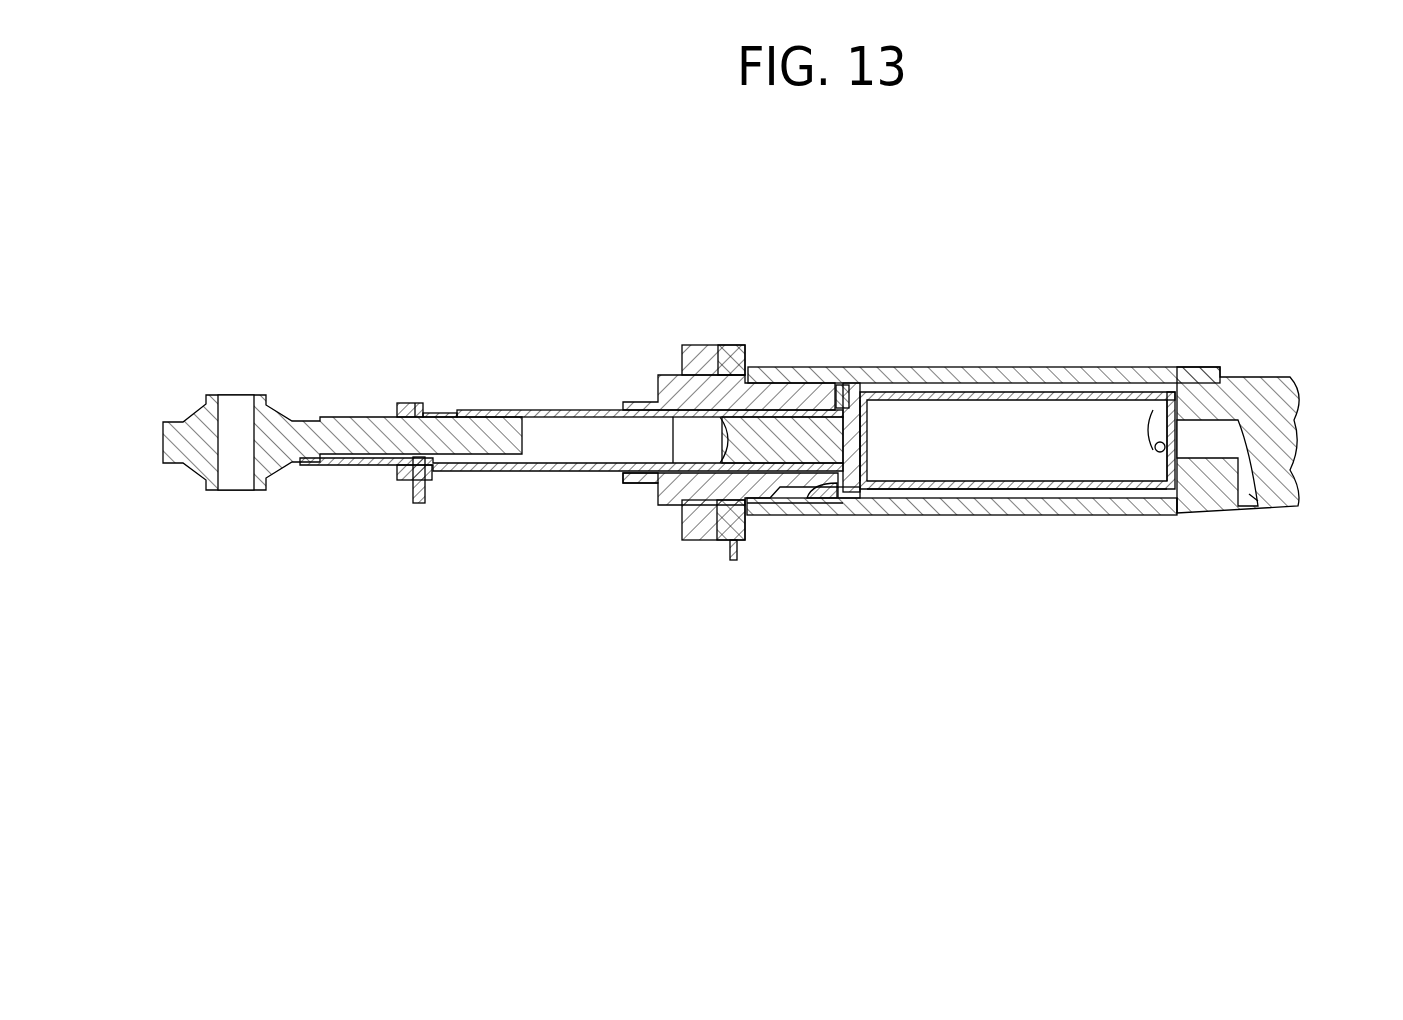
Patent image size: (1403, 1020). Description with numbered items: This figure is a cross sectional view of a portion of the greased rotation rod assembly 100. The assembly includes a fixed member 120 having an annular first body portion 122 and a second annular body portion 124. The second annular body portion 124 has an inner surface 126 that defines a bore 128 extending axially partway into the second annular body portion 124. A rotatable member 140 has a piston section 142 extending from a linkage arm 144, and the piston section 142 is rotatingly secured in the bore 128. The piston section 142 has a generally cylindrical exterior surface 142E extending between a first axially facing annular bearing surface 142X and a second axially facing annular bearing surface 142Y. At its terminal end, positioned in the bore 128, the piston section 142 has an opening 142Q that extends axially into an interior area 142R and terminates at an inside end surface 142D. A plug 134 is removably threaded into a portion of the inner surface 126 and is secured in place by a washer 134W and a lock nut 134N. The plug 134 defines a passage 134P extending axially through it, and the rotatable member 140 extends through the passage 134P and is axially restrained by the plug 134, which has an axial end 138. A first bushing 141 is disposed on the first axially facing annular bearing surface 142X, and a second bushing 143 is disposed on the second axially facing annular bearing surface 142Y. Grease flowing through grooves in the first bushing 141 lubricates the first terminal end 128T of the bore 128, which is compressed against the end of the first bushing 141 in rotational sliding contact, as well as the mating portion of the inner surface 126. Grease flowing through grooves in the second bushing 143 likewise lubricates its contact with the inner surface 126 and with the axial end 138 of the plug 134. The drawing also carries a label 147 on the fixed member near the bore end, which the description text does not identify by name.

The greased rotation rod assembly 100 is at (947, 184).
The fixed member 120 is at (618, 611).
The annular first body portion 122 is at (1278, 376).
The second annular body portion 124 is at (982, 367).
The inner surface 126 is at (1050, 500).
The bore 128 is at (1068, 392).
The first terminal end 128T is at (1180, 395).
The plug 134 is at (660, 388).
The lock nut 134N is at (695, 355).
The washer 134W is at (732, 352).
The passage 134P is at (612, 480).
The axial end 138 is at (848, 385).
The rotatable member 140 is at (500, 473).
The first bushing 141 is at (1177, 503).
The piston section 142 is at (912, 372).
The inside end surface 142D is at (868, 455).
The cylindrical exterior surface 142E is at (933, 515).
The opening 142Q is at (1133, 458).
The interior area 142R is at (975, 452).
The first axially facing annular bearing surface 142X is at (1165, 408).
The second axially facing annular bearing surface 142Y is at (803, 515).
The second bushing 143 is at (847, 515).
The linkage arm 144 is at (747, 435).
The port 147 is at (1255, 497).